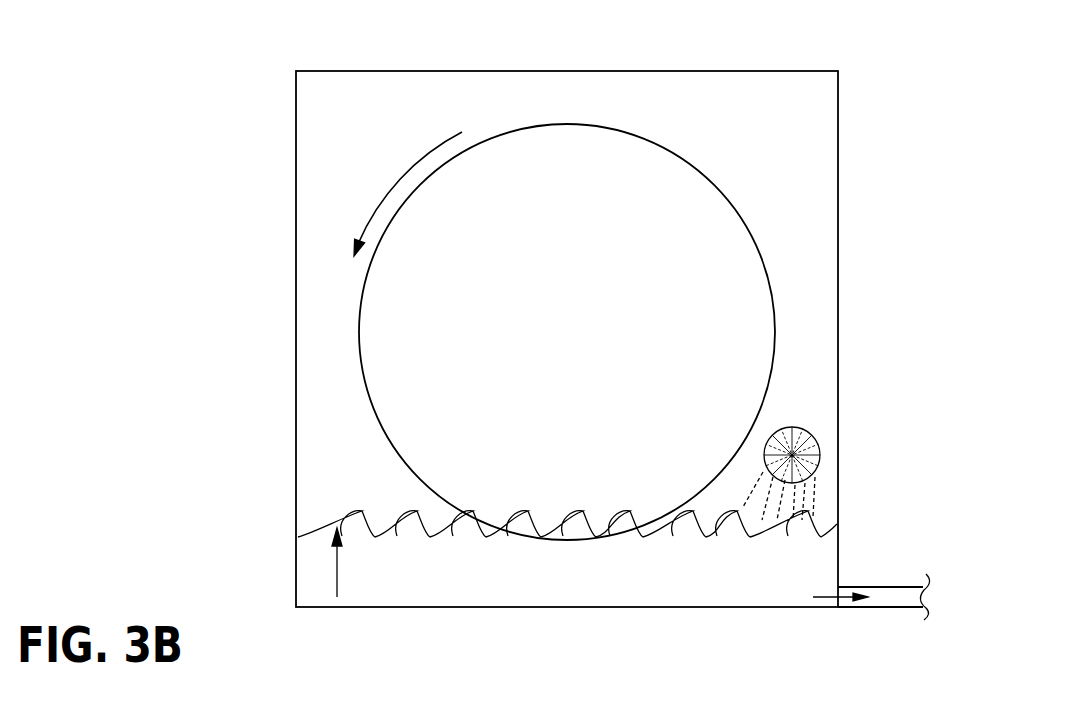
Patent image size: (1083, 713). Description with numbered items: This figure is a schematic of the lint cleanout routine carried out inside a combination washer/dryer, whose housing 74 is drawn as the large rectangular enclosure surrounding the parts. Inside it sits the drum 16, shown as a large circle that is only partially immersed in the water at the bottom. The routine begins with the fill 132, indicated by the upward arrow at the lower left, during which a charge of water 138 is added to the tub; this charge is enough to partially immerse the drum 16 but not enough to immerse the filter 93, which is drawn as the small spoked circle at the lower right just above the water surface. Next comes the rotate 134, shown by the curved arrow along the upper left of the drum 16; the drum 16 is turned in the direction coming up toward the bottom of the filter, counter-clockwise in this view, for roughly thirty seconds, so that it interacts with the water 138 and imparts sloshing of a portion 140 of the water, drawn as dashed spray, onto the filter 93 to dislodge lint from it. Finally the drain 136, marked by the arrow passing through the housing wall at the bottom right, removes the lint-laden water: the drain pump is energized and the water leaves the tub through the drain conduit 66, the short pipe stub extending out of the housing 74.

The housing 74 is at (623, 71).
The drum 16 is at (700, 170).
The rotate 134 is at (417, 160).
The water 138 is at (558, 518).
The fill 132 is at (337, 567).
The filter 93 is at (809, 433).
The portion 140 is at (817, 493).
The drain conduit 66 is at (880, 587).
The drain 136 is at (825, 598).